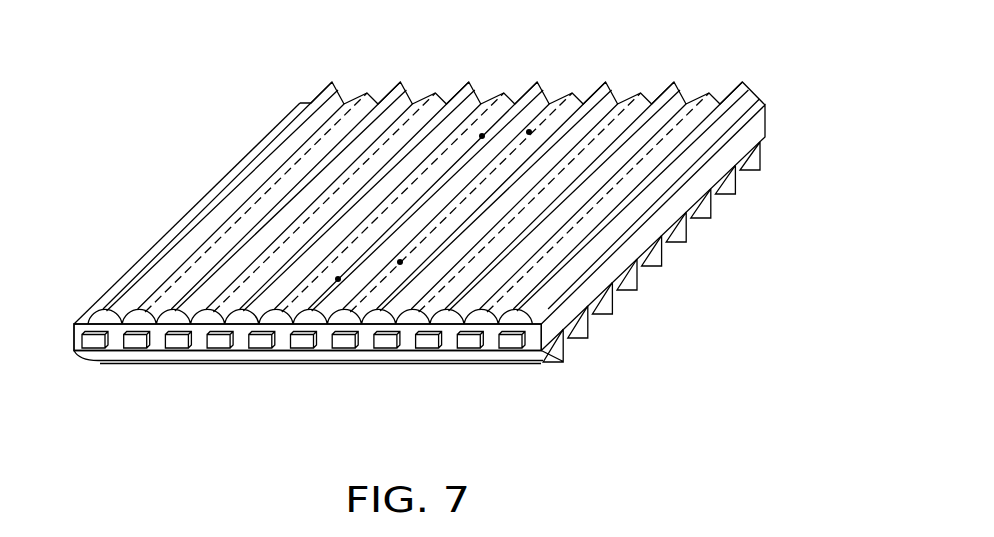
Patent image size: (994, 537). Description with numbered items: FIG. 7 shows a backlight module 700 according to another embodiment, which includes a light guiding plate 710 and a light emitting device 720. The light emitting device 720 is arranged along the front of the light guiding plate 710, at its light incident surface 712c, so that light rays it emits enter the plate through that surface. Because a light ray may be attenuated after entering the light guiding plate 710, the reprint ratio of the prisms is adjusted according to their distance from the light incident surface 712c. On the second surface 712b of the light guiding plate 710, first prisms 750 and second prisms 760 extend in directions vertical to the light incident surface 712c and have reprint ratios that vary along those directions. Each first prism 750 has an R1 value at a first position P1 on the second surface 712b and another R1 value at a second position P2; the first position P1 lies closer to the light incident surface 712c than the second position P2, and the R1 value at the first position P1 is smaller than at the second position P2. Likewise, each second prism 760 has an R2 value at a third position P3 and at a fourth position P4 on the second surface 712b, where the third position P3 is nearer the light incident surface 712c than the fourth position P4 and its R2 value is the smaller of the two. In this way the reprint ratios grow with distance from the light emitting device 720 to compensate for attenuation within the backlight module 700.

The backlight module 700 is at (600, 416).
The light guiding plate 710 is at (769, 92).
The second surface 712b is at (207, 200).
The light incident surface 712c is at (405, 348).
The light emitting device 720 is at (217, 347).
The first prisms 750 is at (536, 106).
The second prisms 760 is at (503, 93).
The first position P1 is at (338, 279).
The second position P2 is at (482, 136).
The third position P3 is at (400, 262).
The fourth position P4 is at (529, 132).